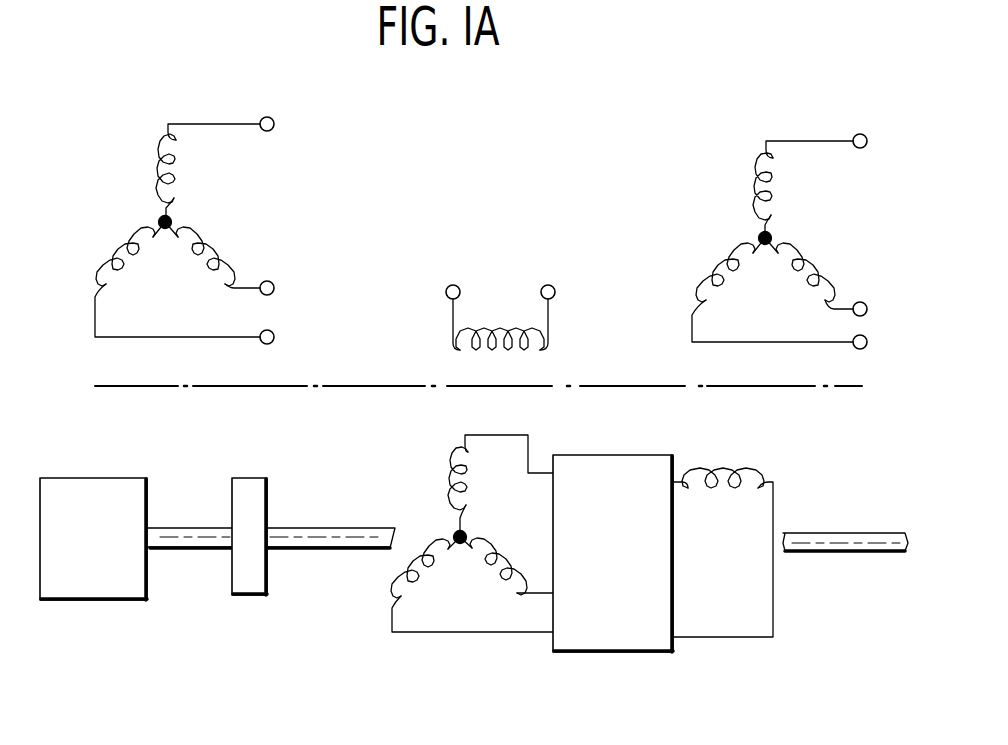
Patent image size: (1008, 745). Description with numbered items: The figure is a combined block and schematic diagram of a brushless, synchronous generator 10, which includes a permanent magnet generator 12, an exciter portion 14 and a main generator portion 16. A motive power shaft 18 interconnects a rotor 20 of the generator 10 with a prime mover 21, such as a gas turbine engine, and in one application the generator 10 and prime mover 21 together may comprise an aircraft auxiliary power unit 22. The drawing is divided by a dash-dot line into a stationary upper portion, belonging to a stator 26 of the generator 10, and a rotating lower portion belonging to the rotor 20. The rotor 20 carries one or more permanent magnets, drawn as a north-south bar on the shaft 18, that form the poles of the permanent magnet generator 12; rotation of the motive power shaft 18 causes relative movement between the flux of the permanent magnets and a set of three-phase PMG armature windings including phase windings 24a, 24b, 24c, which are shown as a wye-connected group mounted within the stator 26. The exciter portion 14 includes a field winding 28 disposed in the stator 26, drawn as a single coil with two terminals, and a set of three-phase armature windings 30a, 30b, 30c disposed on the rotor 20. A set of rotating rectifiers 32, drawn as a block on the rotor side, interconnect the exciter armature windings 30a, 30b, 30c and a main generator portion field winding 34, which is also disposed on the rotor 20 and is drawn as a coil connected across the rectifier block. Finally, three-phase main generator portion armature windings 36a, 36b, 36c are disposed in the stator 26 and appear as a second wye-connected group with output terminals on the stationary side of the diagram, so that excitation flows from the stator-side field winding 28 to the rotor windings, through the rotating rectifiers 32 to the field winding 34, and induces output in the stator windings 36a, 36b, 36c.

The brushless synchronous generator 10 is at (888, 360).
The permanent magnet generator 12 is at (72, 293).
The exciter portion 14 is at (405, 297).
The main generator portion 16 is at (593, 308).
The motive power shaft 18 is at (187, 540).
The rotor 20 is at (370, 617).
The prime mover 21 is at (82, 588).
The aircraft auxiliary power unit 22 is at (260, 478).
The PMG phase winding 24a is at (162, 167).
The PMG phase winding 24b is at (222, 250).
The PMG phase winding 24c is at (127, 250).
The stator 26 is at (110, 363).
The exciter field winding 28 is at (463, 350).
The exciter armature winding 30a is at (453, 463).
The exciter armature winding 30b is at (507, 562).
The exciter armature winding 30c is at (400, 580).
The rotating rectifiers 32 is at (560, 637).
The main generator portion field winding 34 is at (712, 470).
The main generator portion armature winding 36a is at (758, 175).
The main generator portion armature winding 36b is at (803, 265).
The main generator portion armature winding 36c is at (732, 257).